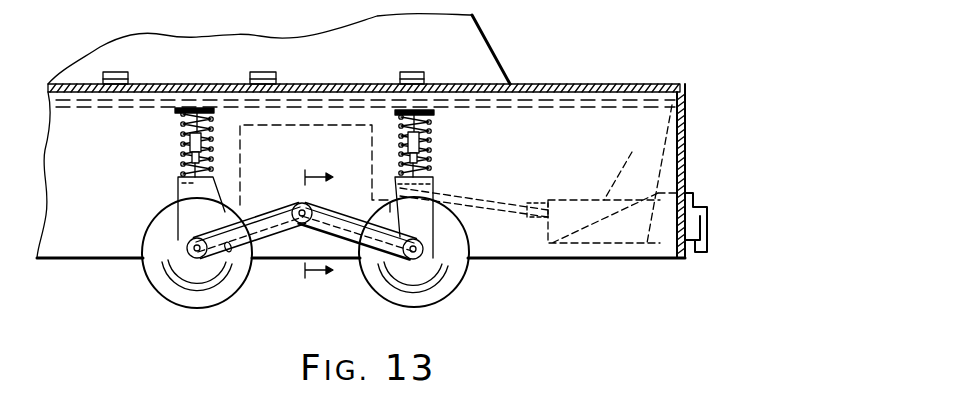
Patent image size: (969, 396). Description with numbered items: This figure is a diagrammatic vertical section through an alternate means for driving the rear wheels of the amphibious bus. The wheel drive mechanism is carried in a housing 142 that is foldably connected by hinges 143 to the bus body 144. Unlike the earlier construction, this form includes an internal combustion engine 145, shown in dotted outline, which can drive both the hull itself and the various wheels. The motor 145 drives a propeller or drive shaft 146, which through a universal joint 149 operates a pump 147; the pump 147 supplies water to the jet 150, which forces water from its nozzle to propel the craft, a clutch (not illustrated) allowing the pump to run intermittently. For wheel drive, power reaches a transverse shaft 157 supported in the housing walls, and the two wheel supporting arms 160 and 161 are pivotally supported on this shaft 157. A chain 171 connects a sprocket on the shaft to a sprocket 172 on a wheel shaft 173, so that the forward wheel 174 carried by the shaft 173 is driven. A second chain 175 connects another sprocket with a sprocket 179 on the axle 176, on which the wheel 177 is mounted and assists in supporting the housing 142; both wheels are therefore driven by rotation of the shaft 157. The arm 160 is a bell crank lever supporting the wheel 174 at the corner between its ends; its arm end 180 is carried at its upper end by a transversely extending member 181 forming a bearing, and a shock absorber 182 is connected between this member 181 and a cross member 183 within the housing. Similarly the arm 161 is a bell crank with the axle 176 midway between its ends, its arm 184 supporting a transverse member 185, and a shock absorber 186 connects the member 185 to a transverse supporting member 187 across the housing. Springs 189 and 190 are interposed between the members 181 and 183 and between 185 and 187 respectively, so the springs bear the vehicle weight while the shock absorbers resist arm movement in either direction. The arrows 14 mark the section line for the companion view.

The direction of movement arrow 14 is at (308, 229).
The housing 142 is at (588, 84).
The hinges 143 is at (115, 75).
The bus body 144 is at (463, 28).
The internal combustion engine 145 is at (338, 123).
The drive shaft 146 is at (510, 197).
The pump 147 is at (640, 174).
The universal joint 149 is at (552, 183).
The jet 150 is at (708, 218).
The transverse shaft 157 is at (302, 203).
The wheel supporting arm 160 is at (258, 225).
The wheel supporting arm 161 is at (341, 212).
The chain 171 is at (226, 253).
The sprocket 172 is at (193, 259).
The wheel shaft 173 is at (194, 248).
The wheel 174 is at (160, 276).
The second chain 175 is at (367, 263).
The axle 176 is at (413, 259).
The wheel 177 is at (433, 293).
The sprocket 179 is at (455, 258).
The arm end 180 is at (193, 205).
The transversely extending member 181 is at (181, 177).
The shock absorber 182 is at (192, 143).
The cross member 183 is at (200, 110).
The arm 184 is at (417, 224).
The transverse member 185 is at (432, 180).
The shock absorber 186 is at (424, 143).
The transverse supporting member 187 is at (421, 110).
The spring 189 is at (187, 123).
The spring 190 is at (420, 126).